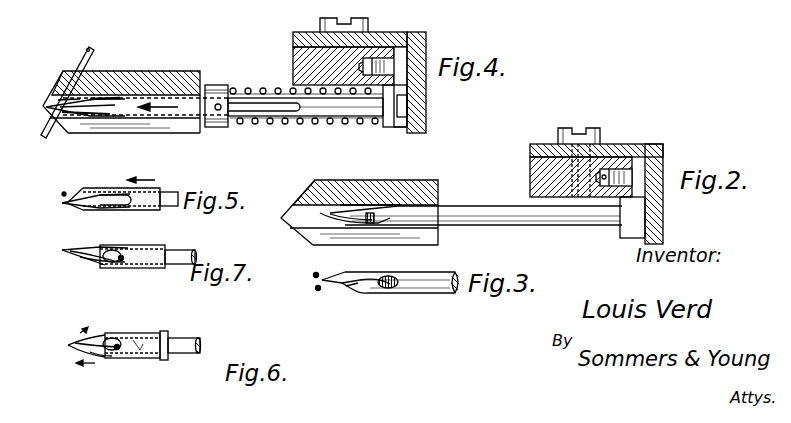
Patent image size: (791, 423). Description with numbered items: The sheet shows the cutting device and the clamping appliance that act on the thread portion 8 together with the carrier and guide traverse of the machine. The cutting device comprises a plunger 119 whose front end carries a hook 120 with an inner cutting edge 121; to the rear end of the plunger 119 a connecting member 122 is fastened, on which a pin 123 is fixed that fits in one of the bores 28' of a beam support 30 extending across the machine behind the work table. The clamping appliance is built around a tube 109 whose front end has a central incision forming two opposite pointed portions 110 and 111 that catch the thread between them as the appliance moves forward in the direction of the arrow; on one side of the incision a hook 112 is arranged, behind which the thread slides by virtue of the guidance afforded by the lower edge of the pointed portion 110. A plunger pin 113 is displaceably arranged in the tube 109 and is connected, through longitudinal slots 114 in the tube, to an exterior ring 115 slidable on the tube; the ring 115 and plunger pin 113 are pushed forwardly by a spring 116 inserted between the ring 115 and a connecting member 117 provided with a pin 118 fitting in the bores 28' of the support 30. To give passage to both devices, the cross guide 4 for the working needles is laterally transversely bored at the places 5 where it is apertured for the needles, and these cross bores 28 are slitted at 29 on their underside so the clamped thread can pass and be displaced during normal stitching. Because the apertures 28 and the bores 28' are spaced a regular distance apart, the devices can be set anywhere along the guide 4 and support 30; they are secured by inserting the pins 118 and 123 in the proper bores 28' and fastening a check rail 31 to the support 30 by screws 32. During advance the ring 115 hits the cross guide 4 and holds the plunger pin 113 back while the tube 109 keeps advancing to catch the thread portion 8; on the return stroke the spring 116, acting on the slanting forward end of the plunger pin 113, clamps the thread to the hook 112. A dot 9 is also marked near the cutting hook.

In FIG. 4, the cross guide 4 is at (171, 72).
In FIG. 2, the cross guide 4 is at (363, 181).
In FIG. 4, the apertured places of the cross guide 5 is at (61, 76).
In FIG. 2, the apertured places of the cross guide 5 is at (296, 183).
In FIG. 4, the thread portion 8 is at (88, 48).
In FIG. 3, the thread portion 8 is at (314, 291).
In FIG. 5, the thread portion 8 is at (60, 194).
In FIG. 7, the thread portion 8 is at (123, 262).
In FIG. 6, the thread portion 8 is at (118, 344).
In FIG. 3, the pin 9 is at (312, 275).
In FIG. 4, the cross bores 28 is at (57, 92).
In FIG. 2, the cross bores 28 is at (375, 182).
In FIG. 2, the bores of the beam support 28' is at (629, 135).
In FIG. 4, the slits of the cross bores 29 is at (150, 126).
In FIG. 2, the slits of the cross bores 29 is at (412, 246).
In FIG. 4, the beam support 30 is at (293, 49).
In FIG. 2, the beam support 30 is at (530, 160).
In FIG. 4, the check rail 31 is at (426, 109).
In FIG. 2, the check rail 31 is at (652, 144).
In FIG. 4, the screws 32 is at (336, 18).
In FIG. 2, the screws 32 is at (590, 134).
In FIG. 4, the tube 109 is at (183, 112).
In FIG. 4, the pointed portion 110 is at (76, 110).
In FIG. 5, the pointed portion 110 is at (68, 202).
In FIG. 7, the pointed portion 110 is at (68, 251).
In FIG. 6, the pointed portion 110 is at (72, 349).
In FIG. 4, the pointed portion 111 is at (106, 96).
In FIG. 5, the pointed portion 111 is at (110, 194).
In FIG. 7, the pointed portion 111 is at (110, 262).
In FIG. 6, the pointed portion 111 is at (108, 340).
In FIG. 4, the hook 112 is at (102, 116).
In FIG. 7, the hook 112 is at (100, 260).
In FIG. 6, the hook 112 is at (104, 359).
In FIG. 4, the plunger pin 113 is at (66, 100).
In FIG. 5, the plunger pin 113 is at (83, 191).
In FIG. 7, the plunger pin 113 is at (133, 247).
In FIG. 6, the plunger pin 113 is at (138, 360).
In FIG. 4, the longitudinal slots 114 is at (262, 114).
In FIG. 4, the ring 115 is at (214, 85).
In FIG. 4, the spring 116 is at (322, 124).
In FIG. 4, the connecting member 117 is at (400, 76).
In FIG. 4, the pin 118 is at (378, 62).
In FIG. 2, the plunger 119 is at (470, 201).
In FIG. 3, the plunger 119 is at (412, 289).
In FIG. 2, the hook 120 is at (350, 224).
In FIG. 3, the hook 120 is at (333, 284).
In FIG. 3, the cutting edge 121 is at (358, 292).
In FIG. 2, the connecting member 122 is at (634, 228).
In FIG. 2, the pin 123 is at (608, 188).